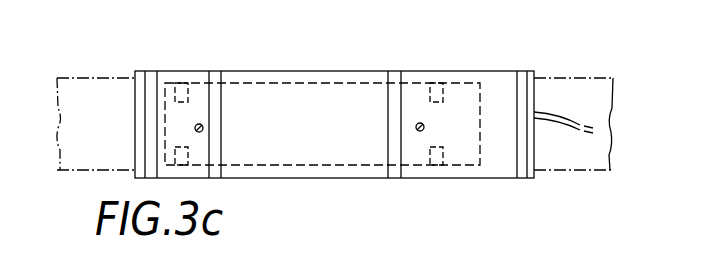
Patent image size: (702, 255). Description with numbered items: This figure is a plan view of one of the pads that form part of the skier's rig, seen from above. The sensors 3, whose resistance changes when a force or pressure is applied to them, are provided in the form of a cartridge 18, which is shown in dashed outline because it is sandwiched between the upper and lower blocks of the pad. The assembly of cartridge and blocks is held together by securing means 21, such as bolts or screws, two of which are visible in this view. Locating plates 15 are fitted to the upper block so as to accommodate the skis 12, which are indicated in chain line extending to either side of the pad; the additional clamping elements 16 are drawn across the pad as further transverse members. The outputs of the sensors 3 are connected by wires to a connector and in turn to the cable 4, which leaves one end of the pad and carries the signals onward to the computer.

The skis 12 is at (110, 113).
The locating plates 15 is at (150, 72).
The retaining clamp 16 is at (217, 73).
The cartridge 18 is at (311, 94).
The sensors 3 is at (438, 83).
The securing means 21 is at (203, 131).
The cable 4 is at (563, 120).